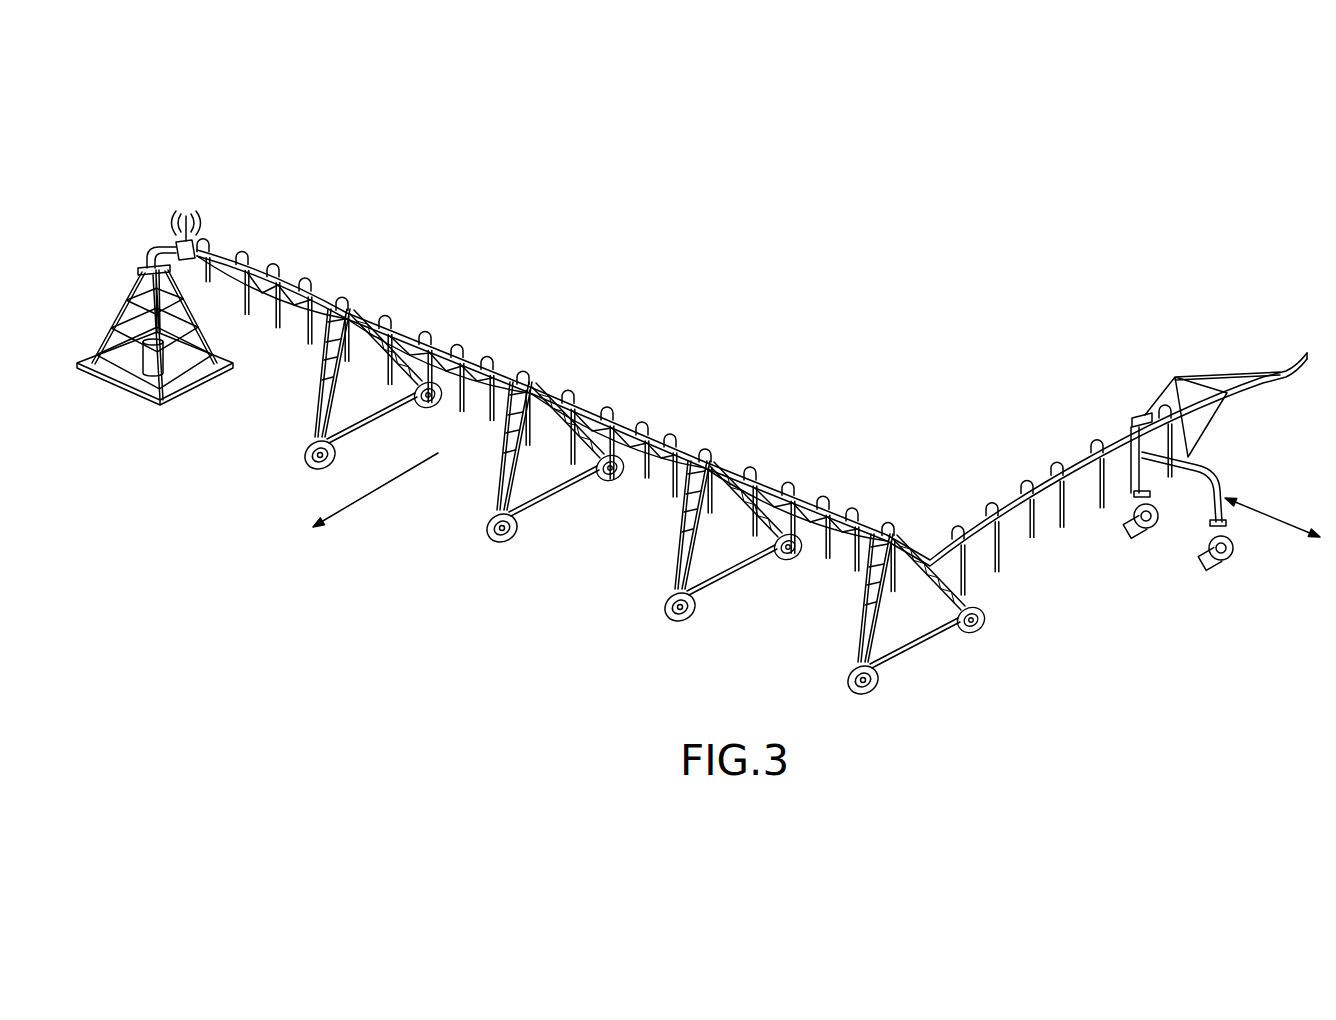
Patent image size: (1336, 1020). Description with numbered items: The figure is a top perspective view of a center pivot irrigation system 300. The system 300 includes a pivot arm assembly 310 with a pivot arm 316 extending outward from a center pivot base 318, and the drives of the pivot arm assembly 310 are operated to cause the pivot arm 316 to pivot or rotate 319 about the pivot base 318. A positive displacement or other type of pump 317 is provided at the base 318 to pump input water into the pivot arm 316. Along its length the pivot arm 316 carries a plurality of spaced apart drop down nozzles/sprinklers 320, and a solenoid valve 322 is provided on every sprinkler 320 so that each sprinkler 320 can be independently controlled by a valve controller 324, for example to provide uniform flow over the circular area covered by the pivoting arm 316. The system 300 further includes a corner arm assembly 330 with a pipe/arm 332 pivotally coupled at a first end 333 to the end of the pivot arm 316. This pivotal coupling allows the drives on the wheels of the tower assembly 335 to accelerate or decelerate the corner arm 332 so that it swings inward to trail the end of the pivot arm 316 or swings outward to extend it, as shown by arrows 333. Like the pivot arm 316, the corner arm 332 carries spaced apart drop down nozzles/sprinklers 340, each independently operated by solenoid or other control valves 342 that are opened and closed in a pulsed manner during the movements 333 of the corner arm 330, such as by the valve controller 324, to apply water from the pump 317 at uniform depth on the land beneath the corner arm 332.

The center pivot irrigation system 300 is at (637, 258).
The pivot arm assembly 310 is at (280, 438).
The pivot arm 316 is at (326, 298).
The pump 317 is at (137, 360).
The center pivot base 318 is at (180, 395).
The pivot or rotation 319 is at (358, 503).
The drop down nozzles/sprinklers 320 is at (853, 547).
The solenoid valve 322 is at (817, 503).
The valve controller 324 is at (193, 241).
The corner arm assembly 330 is at (1104, 388).
The corner arm 332 is at (915, 562).
The first end / movements of corner arm 333 is at (937, 587).
The tower assembly 335 is at (1179, 560).
The drop down nozzles/sprinklers 340 is at (1062, 530).
The control valves 342 is at (1060, 462).